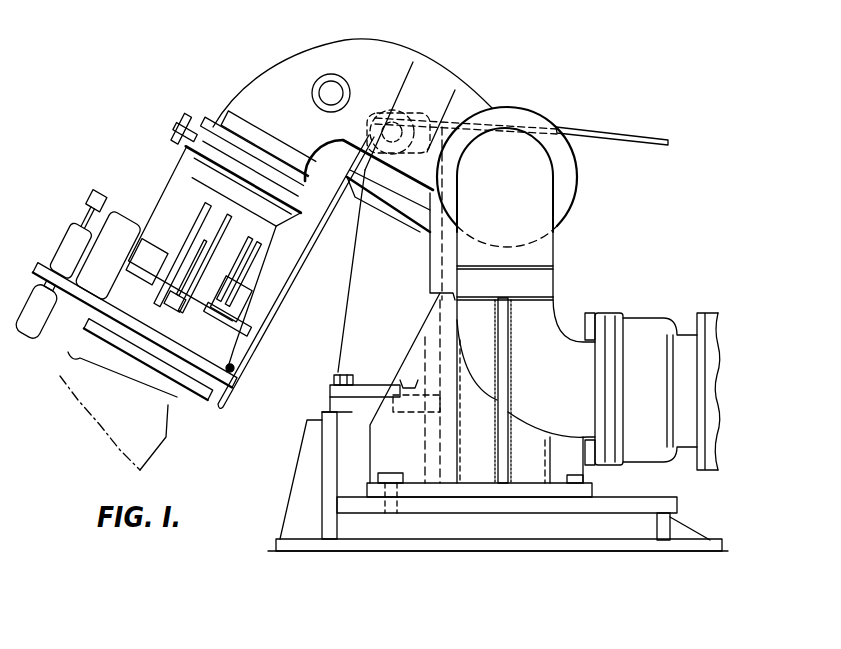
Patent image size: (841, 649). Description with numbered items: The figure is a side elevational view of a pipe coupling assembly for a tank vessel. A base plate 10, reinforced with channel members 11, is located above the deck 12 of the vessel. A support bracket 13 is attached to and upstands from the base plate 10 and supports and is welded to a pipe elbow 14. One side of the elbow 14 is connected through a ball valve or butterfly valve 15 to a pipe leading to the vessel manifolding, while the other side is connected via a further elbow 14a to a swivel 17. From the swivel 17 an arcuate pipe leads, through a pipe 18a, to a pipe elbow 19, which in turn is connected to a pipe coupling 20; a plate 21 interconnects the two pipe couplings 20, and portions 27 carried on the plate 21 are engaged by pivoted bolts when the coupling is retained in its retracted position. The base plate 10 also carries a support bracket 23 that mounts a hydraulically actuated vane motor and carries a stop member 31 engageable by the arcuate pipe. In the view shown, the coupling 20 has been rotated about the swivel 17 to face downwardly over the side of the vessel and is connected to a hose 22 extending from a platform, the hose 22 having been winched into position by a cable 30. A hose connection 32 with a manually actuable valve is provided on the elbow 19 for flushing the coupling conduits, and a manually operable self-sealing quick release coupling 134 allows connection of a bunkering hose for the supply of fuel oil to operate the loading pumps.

The base plate 10 is at (617, 499).
The channel members 11 is at (287, 509).
The deck 12 is at (632, 551).
The support bracket 13 is at (488, 457).
The pipe elbow 14 is at (556, 384).
The elbow 14a is at (519, 227).
The ball valve or butterfly valve 15 is at (648, 330).
The swivel 17 is at (533, 116).
The pipe 18a is at (468, 105).
The pipe elbow 19 is at (372, 56).
The pipe coupling 20 is at (182, 213).
The plate 21 is at (303, 213).
The hose 22 is at (160, 440).
The support bracket 23 is at (390, 347).
The portions 27 is at (170, 117).
The cable 30 is at (285, 287).
The stop member 31 is at (403, 216).
The hose connection 32 is at (311, 89).
The self-sealing quick release coupling 134 is at (72, 262).